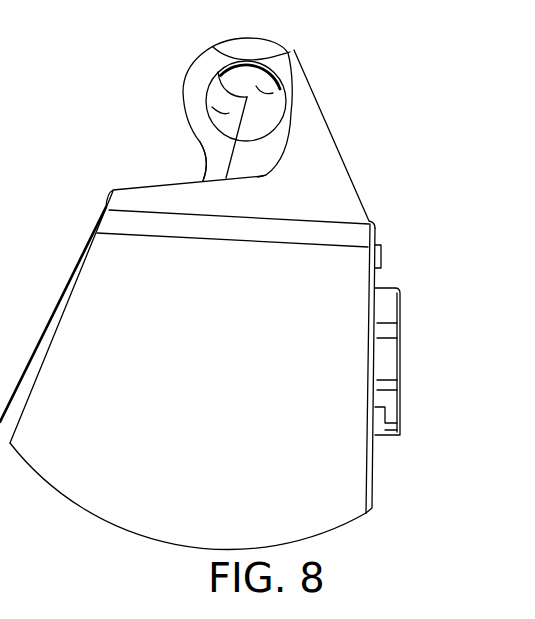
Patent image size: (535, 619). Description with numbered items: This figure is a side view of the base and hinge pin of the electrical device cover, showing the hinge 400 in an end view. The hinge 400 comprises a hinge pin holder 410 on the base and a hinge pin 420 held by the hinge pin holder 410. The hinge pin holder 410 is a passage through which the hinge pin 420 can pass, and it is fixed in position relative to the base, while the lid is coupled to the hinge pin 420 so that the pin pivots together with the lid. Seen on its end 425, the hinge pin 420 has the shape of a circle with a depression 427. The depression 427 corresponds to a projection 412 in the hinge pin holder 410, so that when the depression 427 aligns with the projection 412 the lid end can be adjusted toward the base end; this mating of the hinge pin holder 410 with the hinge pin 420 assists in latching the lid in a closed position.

The hinge 400 is at (214, 48).
The hinge pin holder 410 is at (304, 54).
The hinge pin 420 is at (310, 83).
The depression 427 is at (206, 104).
The projection 412 is at (221, 147).
The end 425 is at (268, 117).